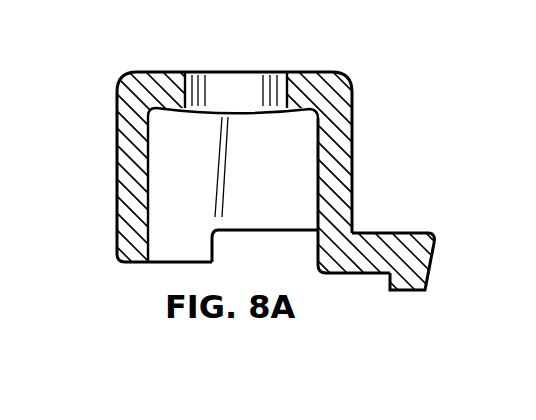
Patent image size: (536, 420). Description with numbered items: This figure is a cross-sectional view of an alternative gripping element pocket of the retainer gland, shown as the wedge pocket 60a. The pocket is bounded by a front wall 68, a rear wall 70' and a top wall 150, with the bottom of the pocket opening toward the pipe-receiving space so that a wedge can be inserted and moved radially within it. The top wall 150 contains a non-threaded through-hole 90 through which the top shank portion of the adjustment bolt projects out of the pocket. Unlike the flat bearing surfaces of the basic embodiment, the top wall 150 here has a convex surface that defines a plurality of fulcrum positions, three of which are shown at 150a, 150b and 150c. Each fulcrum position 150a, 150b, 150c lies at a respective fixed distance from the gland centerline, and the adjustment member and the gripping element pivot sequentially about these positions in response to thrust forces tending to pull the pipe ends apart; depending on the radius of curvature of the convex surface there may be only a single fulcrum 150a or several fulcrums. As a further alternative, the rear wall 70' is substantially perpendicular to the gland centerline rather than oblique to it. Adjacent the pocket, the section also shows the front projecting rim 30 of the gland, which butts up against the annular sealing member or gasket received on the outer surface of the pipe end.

The wedge pocket 60a is at (108, 37).
The through-hole 90 is at (202, 81).
The top wall 150 is at (300, 72).
The fulcrum position 150a is at (233, 118).
The fulcrum position 150b is at (210, 167).
The fulcrum position 150c is at (171, 112).
The rear wall 70' is at (268, 210).
The front wall 68 is at (355, 166).
The front projecting rim 30 is at (390, 233).